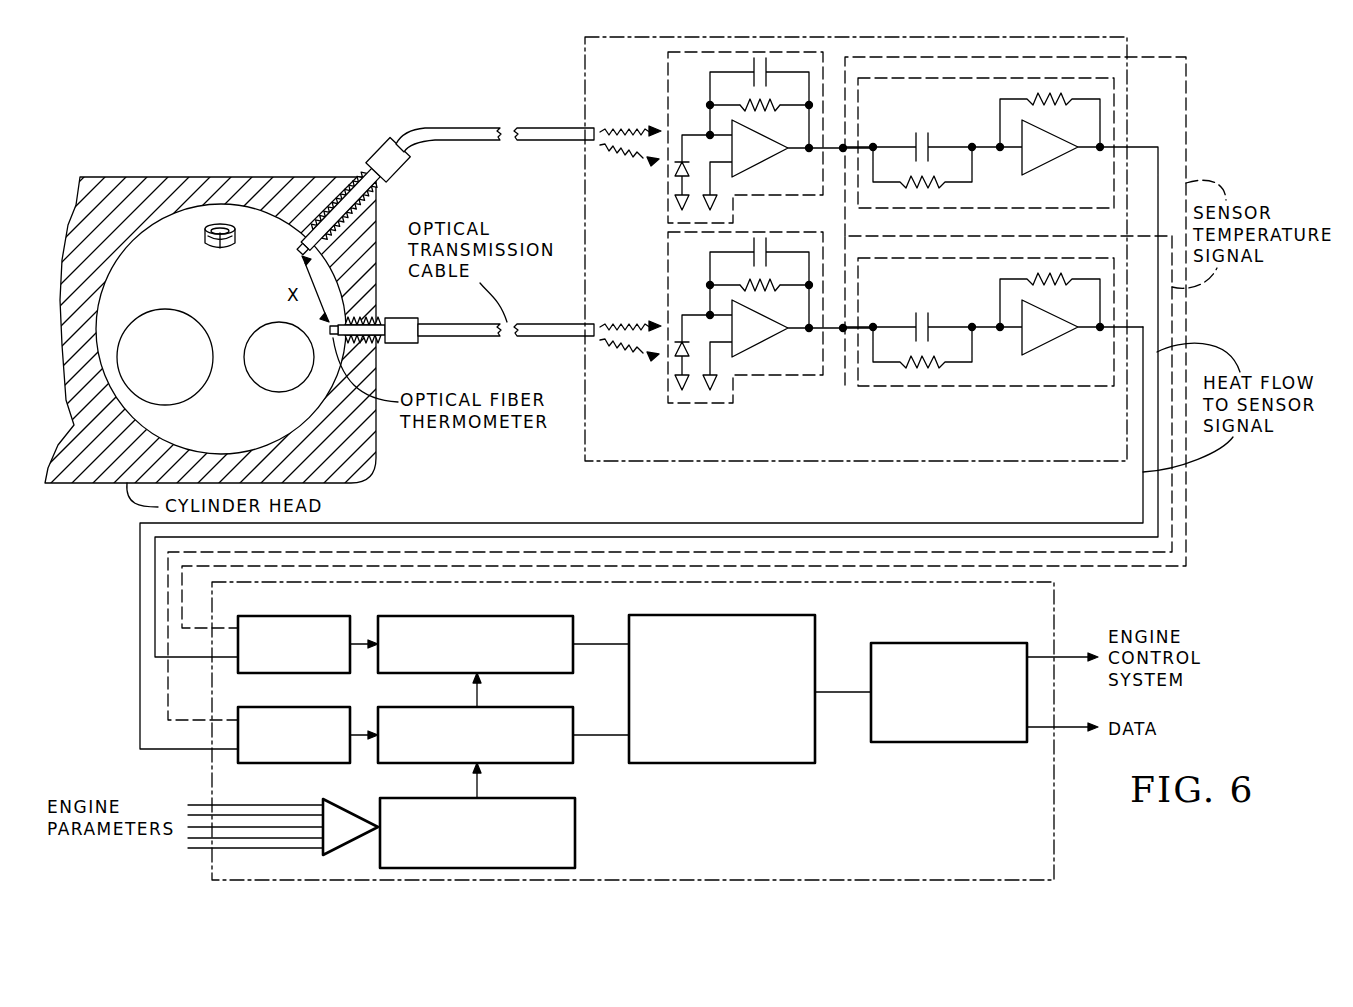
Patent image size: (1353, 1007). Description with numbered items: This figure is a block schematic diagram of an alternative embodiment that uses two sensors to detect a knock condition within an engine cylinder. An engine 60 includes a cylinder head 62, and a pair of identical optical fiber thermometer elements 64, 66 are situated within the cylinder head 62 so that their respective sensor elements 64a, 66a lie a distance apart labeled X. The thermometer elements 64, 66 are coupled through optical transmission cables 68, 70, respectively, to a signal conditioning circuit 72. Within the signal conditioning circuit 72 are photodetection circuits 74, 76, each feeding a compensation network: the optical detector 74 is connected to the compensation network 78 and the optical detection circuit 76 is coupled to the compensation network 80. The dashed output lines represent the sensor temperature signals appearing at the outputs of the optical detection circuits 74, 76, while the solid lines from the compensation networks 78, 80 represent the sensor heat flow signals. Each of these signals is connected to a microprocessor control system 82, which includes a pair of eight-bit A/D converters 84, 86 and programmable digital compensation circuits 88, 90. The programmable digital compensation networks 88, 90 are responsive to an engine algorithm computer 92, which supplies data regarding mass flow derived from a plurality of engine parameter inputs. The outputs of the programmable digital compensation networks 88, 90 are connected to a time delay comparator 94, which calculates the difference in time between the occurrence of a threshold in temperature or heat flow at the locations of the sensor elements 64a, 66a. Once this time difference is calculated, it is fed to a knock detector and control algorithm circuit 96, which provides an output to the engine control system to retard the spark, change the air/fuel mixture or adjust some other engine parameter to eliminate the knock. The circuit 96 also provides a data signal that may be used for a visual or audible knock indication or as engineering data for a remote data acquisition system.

The engine 60 is at (192, 177).
The cylinder head 62 is at (254, 203).
The optical fiber thermometer element 64 is at (376, 212).
The sensor element 64a is at (293, 248).
The optical fiber thermometer element 66 is at (378, 318).
The sensor element 66a is at (330, 330).
The optical transmission cable 68 is at (463, 128).
The optical transmission cable 70 is at (554, 324).
The signal conditioning circuit 72 is at (688, 462).
The photodetection circuit 74 is at (812, 179).
The photodetection circuit 76 is at (812, 359).
The compensation network 78 is at (1102, 179).
The compensation network 80 is at (1102, 359).
The microprocessor control system 82 is at (1055, 806).
The 8 bit A/D converter 84 is at (308, 616).
The 8 bit A/D converter 86 is at (295, 763).
The programmable digital compensation circuit 88 is at (467, 616).
The programmable digital compensation circuit 90 is at (545, 707).
The engine algorithm computer 92 is at (578, 850).
The time delay comparator 94 is at (815, 650).
The knock detector and control algorithm circuit 96 is at (945, 643).